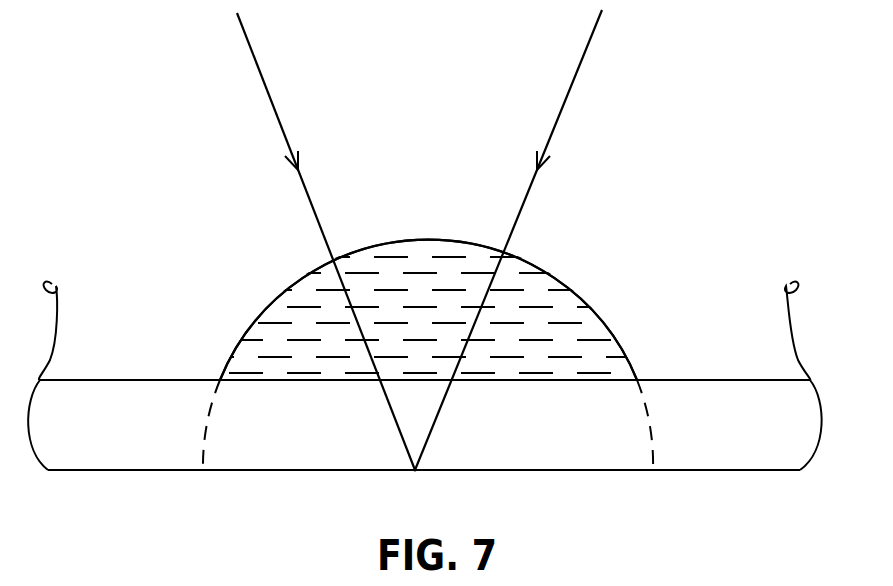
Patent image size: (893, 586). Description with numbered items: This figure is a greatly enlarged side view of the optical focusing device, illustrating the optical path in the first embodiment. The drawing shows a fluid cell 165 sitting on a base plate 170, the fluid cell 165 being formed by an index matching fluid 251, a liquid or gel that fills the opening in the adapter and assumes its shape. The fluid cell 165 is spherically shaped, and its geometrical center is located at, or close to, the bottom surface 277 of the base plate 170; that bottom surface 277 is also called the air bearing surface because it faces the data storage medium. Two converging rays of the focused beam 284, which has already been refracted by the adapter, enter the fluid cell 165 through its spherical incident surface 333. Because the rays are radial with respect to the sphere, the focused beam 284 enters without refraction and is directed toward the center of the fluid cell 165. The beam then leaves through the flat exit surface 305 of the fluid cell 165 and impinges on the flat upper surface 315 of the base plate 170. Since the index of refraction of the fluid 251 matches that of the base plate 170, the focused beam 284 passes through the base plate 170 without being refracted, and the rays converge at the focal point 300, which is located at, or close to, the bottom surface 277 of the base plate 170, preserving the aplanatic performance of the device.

The fluid cell 165 is at (220, 360).
The base plate 170 is at (97, 476).
The index matching fluid 251 is at (281, 311).
The bottom surface of the base plate 277 is at (735, 473).
The focused beam 284 is at (260, 85).
The focal point 300 is at (415, 470).
The flat exit surface of the fluid cell 305 is at (598, 381).
The flat upper surface of the base plate 315 is at (733, 379).
The spherical incident surface of the fluid cell 333 is at (557, 282).